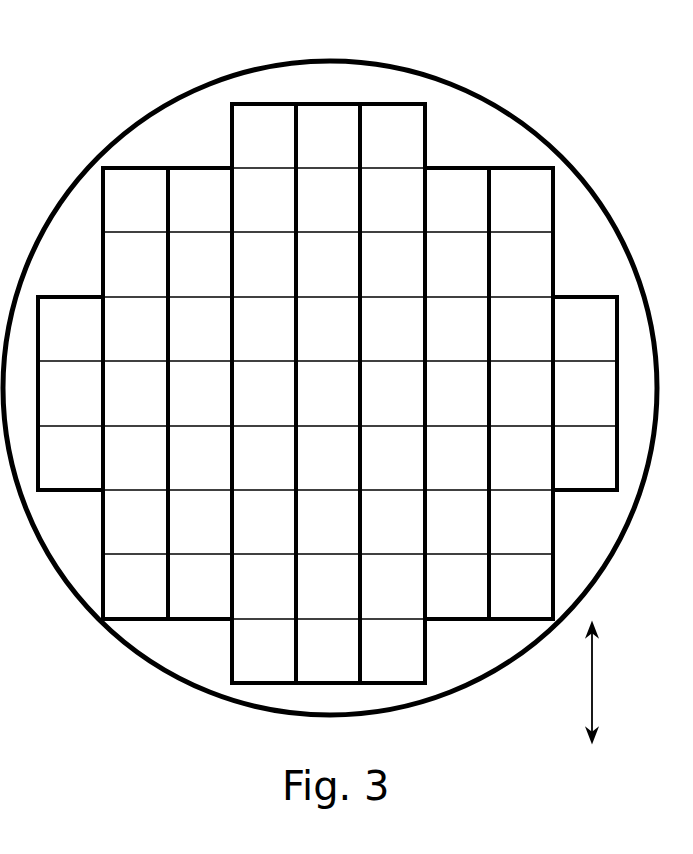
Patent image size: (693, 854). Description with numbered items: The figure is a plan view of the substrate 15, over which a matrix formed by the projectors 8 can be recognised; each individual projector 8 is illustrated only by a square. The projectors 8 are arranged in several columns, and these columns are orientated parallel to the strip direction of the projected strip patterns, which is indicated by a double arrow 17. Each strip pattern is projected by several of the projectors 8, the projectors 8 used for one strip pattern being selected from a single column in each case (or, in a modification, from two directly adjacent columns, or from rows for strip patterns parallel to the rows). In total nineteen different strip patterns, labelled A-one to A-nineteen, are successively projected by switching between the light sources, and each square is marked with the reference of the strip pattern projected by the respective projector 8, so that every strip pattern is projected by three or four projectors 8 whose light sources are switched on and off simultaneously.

The projector 8 is at (390, 103).
The substrate 15 is at (498, 103).
The double arrow 17 is at (594, 686).